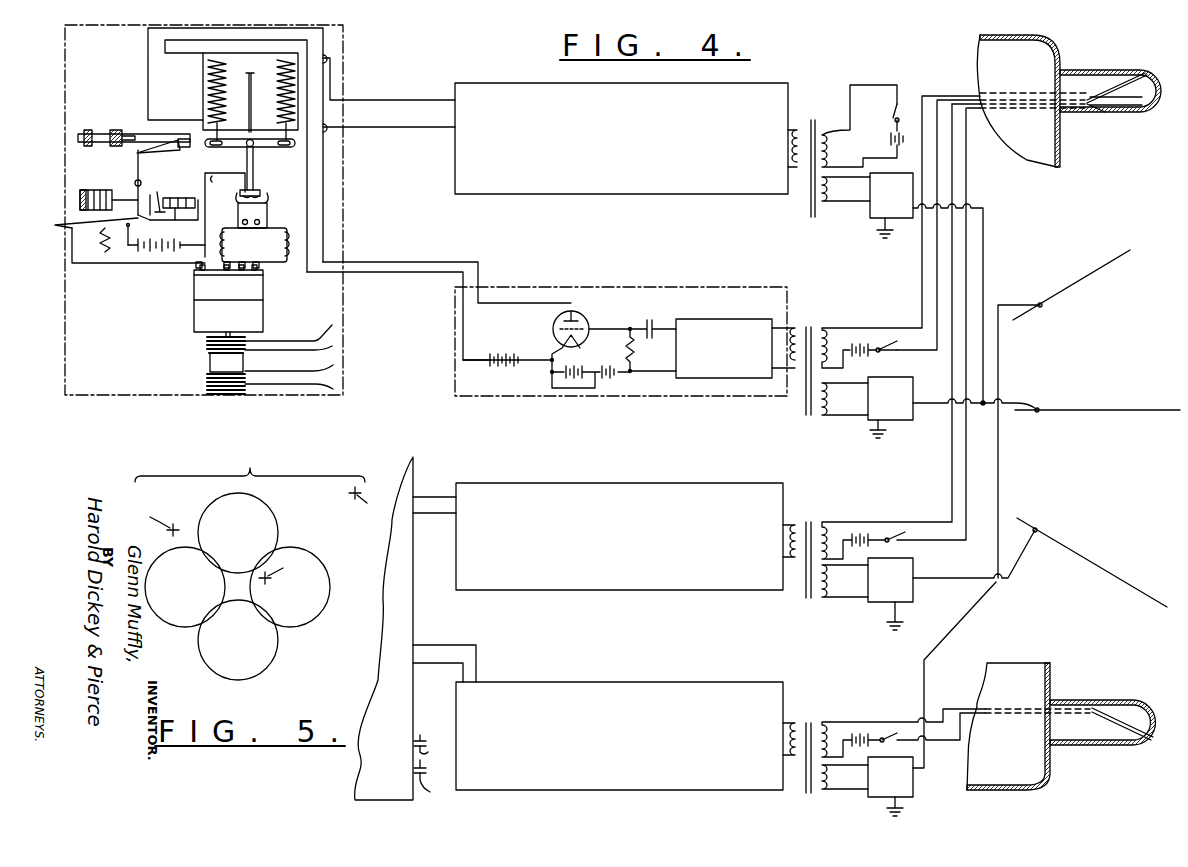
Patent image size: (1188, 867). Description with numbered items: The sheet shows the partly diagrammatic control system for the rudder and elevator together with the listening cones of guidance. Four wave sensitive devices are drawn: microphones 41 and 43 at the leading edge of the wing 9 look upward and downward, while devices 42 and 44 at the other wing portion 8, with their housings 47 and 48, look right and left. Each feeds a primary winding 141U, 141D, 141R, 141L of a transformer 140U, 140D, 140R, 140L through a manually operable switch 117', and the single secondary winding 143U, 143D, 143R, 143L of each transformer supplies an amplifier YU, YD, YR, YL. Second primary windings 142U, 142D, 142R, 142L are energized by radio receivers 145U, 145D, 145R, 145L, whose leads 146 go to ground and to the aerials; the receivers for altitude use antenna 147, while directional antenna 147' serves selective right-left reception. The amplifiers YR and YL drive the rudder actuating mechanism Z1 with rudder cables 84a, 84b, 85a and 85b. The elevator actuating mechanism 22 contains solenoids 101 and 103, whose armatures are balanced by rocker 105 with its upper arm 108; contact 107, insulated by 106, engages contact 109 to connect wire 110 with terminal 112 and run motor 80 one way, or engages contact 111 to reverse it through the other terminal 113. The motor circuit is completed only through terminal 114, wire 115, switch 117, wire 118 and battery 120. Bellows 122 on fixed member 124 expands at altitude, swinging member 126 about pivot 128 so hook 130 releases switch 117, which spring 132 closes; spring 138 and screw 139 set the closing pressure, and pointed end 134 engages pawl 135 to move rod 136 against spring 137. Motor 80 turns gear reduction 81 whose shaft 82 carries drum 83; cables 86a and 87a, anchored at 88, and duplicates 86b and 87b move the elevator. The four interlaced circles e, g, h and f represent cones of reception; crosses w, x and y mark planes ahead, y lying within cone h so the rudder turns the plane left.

In FIG. 4, the elevator actuating mechanism 22 is at (153, 397).
In FIG. 4, the electric motor 80 is at (263, 290).
In FIG. 4, the gear reduction 81 is at (255, 318).
In FIG. 4, the slow speed shaft 82 is at (228, 335).
In FIG. 4, the drum 83 is at (210, 362).
In FIG. 4, the anchor 88 is at (207, 343).
In FIG. 4, the elevator control cable 86a is at (310, 328).
In FIG. 4, the elevator control cable 87a is at (311, 349).
In FIG. 4, the elevator control cable 86b is at (310, 367).
In FIG. 4, the elevator control cable 87b is at (310, 388).
In FIG. 4, the rudder control cable 84a is at (421, 738).
In FIG. 4, the rudder control cable 85a is at (426, 754).
In FIG. 4, the rudder control cable 84b is at (414, 771).
In FIG. 4, the rudder control cable 85b is at (428, 792).
In FIG. 4, the solenoid 101 is at (208, 82).
In FIG. 4, the solenoid 103 is at (300, 90).
In FIG. 4, the rocker 105 is at (262, 150).
In FIG. 4, the insulation 106 is at (258, 191).
In FIG. 4, the contact 107 is at (259, 198).
In FIG. 4, the upper arm 108 is at (262, 66).
In FIG. 4, the contact 109 is at (264, 203).
In FIG. 4, the wire 110 is at (275, 229).
In FIG. 4, the contact 111 is at (237, 205).
In FIG. 4, the terminal 112 is at (257, 265).
In FIG. 4, the terminal 113 is at (243, 262).
In FIG. 4, the terminal 114 is at (183, 247).
In FIG. 4, the wire 115 is at (135, 263).
In FIG. 4, the switch 117 is at (82, 219).
In FIG. 4, the wire 118 is at (128, 232).
In FIG. 4, the battery 120 is at (175, 226).
In FIG. 4, the bellows 122 is at (100, 190).
In FIG. 4, the fixed member 124 is at (80, 191).
In FIG. 4, the member 126 is at (143, 183).
In FIG. 4, the pivot 128 is at (150, 182).
In FIG. 4, the hook 130 is at (148, 218).
In FIG. 4, the spring 132 is at (100, 240).
In FIG. 4, the pointed end 134 is at (146, 150).
In FIG. 4, the pawl 135 is at (185, 149).
In FIG. 4, the rod 136 is at (80, 130).
In FIG. 4, the spring 137 is at (102, 129).
In FIG. 4, the spring 138 is at (156, 205).
In FIG. 4, the screw 139 is at (185, 197).
In FIG. 4, the transformer 140U is at (818, 120).
In FIG. 4, the primary winding 141U is at (830, 148).
In FIG. 4, the primary winding 142U is at (836, 193).
In FIG. 4, the secondary winding 143U is at (790, 168).
In FIG. 4, the radio receiver 145U is at (926, 288).
In FIG. 4, the transformer 140D is at (808, 327).
In FIG. 4, the primary winding 141D is at (830, 330).
In FIG. 4, the primary winding 142D is at (817, 418).
In FIG. 4, the secondary winding 143D is at (795, 327).
In FIG. 4, the radio receiver 145D is at (878, 387).
In FIG. 4, the transformer 140R is at (810, 522).
In FIG. 4, the primary winding 141R is at (828, 532).
In FIG. 4, the primary winding 142R is at (820, 594).
In FIG. 4, the secondary winding 143R is at (797, 522).
In FIG. 4, the radio receiver 145R is at (951, 649).
In FIG. 4, the transformer 140L is at (808, 722).
In FIG. 4, the primary winding 141L is at (830, 723).
In FIG. 4, the primary winding 142L is at (820, 789).
In FIG. 4, the secondary winding 143L is at (797, 723).
In FIG. 4, the radio receiver 145L is at (890, 777).
In FIG. 4, the lead 146 is at (886, 240).
In FIG. 4, the switch 117' is at (896, 423).
In FIG. 4, the antenna 147 is at (1097, 422).
In FIG. 4, the directional radio antenna 147' is at (1064, 414).
In FIG. 4, the wing 9 is at (1062, 62).
In FIG. 4, the microphone 41 is at (1127, 118).
In FIG. 4, the microphone 43 is at (1147, 110).
In FIG. 4, the wave sensitive device 44 is at (1155, 77).
In FIG. 4, the lead 47 is at (1104, 113).
In FIG. 4, the lower probe housing 8 is at (1052, 680).
In FIG. 4, the tube 48 is at (1093, 747).
In FIG. 4, the wave sensitive device 42 is at (1150, 744).
In FIG. 4, the amplifier YU is at (612, 194).
In FIG. 4, the amplifier YD is at (625, 396).
In FIG. 4, the amplifier YR is at (608, 590).
In FIG. 4, the amplifier YL is at (643, 790).
In FIG. 4, the rudder actuating mechanism Z1 is at (416, 466).
In FIG. 5, the cone of reception e is at (238, 533).
In FIG. 5, the cone of reception g is at (185, 587).
In FIG. 5, the cone of reception h is at (290, 587).
In FIG. 5, the cone of reception f is at (238, 640).
In FIG. 5, the plane position x is at (159, 522).
In FIG. 5, the plane position y is at (276, 570).
In FIG. 5, the plane position w is at (364, 499).